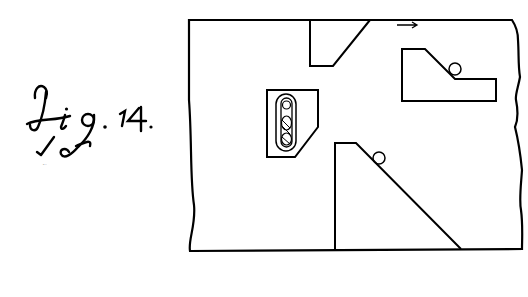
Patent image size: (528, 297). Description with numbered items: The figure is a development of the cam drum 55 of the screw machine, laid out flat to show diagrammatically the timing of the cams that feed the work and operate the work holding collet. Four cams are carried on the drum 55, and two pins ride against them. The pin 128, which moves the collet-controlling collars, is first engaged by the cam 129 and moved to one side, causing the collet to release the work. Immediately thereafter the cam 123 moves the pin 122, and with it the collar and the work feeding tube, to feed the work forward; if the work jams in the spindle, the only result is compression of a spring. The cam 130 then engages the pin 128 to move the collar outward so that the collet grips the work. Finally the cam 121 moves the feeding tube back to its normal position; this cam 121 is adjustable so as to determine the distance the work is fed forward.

The drum 55 is at (355, 135).
The cam 121 is at (308, 128).
The pin 122 is at (385, 155).
The cam 123 is at (398, 197).
The pin 128 is at (460, 64).
The cam 129 is at (449, 75).
The cam 130 is at (340, 43).